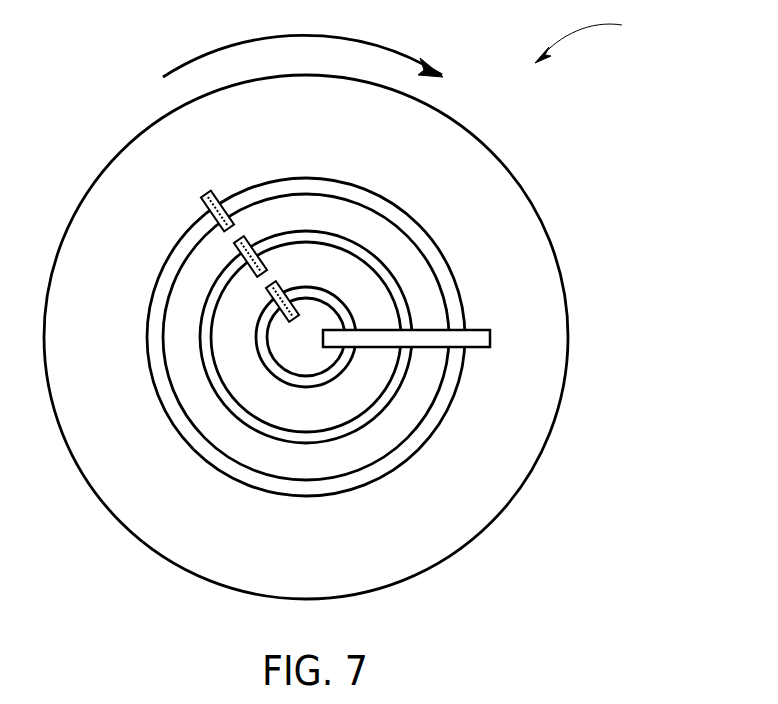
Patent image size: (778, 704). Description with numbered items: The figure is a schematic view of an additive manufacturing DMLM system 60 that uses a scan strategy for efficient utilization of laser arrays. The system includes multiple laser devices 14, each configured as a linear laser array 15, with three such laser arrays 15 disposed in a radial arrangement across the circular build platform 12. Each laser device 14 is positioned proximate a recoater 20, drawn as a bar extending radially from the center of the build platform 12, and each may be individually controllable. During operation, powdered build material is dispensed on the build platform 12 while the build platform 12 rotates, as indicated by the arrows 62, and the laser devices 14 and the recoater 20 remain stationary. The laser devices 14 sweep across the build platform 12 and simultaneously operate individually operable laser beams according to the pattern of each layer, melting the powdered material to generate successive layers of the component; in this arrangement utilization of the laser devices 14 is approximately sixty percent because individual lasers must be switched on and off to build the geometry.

The build platform 12 is at (100, 173).
The laser device 14 is at (209, 191).
The laser array 15 is at (272, 290).
The recoater 20 is at (487, 329).
The DMLM system 60 is at (596, 38).
The arrows 62 is at (397, 52).